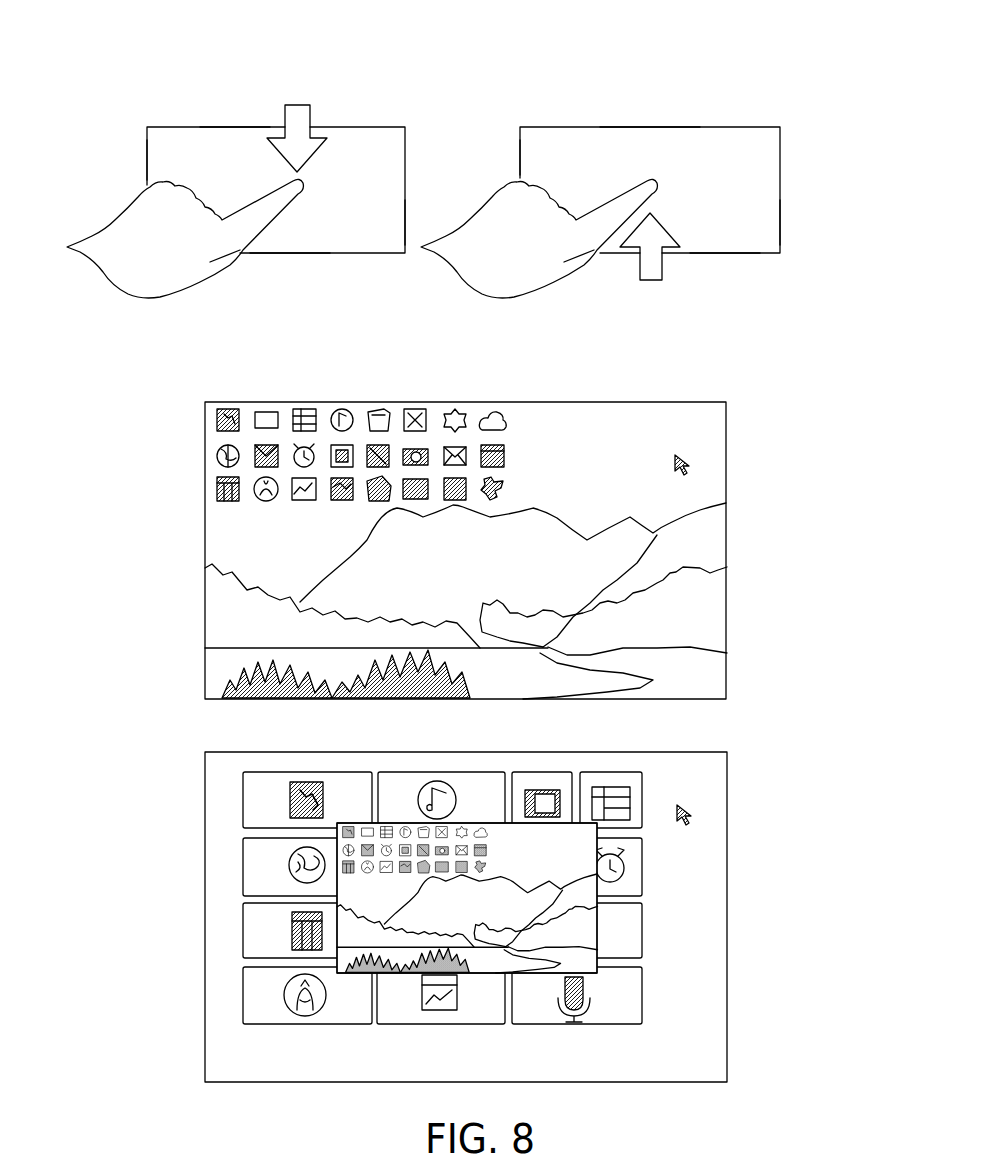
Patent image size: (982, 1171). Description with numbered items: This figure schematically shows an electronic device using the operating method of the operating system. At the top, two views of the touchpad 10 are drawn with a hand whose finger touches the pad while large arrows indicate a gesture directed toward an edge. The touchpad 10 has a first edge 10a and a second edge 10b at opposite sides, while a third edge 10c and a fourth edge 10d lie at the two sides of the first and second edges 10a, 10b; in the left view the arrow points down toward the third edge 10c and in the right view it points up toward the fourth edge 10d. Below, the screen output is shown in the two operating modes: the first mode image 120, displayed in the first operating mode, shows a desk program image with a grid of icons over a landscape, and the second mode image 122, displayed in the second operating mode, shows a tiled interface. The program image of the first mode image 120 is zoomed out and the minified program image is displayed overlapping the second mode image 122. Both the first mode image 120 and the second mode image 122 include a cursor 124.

The touchpad 10 is at (165, 150).
The first edge 10a is at (405, 193).
The second edge 10b is at (147, 177).
The third edge 10c is at (273, 127).
The fourth edge 10d is at (247, 255).
The first mode image 120 is at (408, 530).
The second mode image 122 is at (205, 910).
The cursor 124 is at (692, 470).